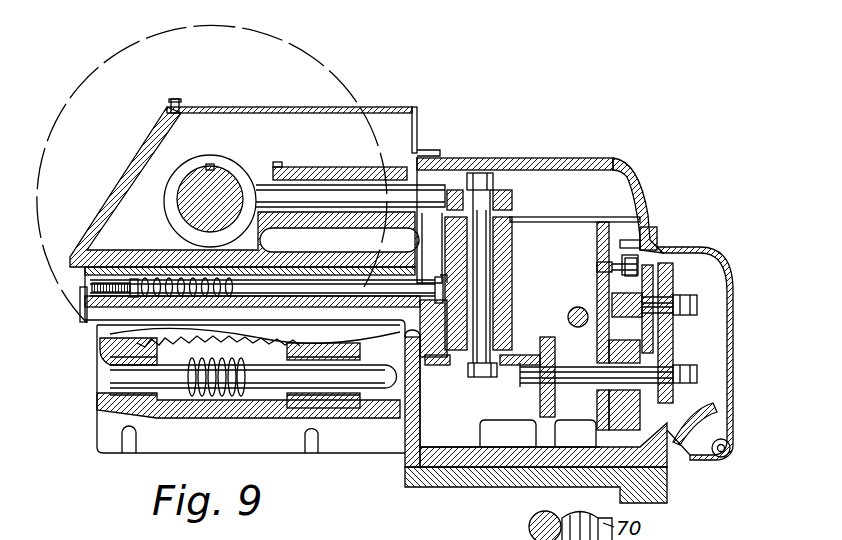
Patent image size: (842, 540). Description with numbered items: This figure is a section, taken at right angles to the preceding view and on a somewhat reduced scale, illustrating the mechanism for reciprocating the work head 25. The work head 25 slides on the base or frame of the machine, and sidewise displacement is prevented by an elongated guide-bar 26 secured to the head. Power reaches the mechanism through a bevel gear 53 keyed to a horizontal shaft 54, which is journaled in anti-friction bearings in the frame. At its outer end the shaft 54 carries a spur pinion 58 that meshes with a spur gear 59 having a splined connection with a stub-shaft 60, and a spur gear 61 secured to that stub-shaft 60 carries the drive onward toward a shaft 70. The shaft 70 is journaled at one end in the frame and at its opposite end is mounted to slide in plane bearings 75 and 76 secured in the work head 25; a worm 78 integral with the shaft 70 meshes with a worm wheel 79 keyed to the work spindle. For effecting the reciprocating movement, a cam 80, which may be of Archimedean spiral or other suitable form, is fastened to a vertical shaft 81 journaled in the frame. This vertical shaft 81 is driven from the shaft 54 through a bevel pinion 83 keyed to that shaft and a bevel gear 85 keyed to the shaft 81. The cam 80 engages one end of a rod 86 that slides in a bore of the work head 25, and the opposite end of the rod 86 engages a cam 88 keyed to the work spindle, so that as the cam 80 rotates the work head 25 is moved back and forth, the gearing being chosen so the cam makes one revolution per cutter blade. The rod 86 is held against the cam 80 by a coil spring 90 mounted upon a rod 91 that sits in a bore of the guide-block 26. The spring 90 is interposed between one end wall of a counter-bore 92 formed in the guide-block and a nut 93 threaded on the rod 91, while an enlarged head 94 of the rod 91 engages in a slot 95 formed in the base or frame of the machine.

The work head 25 is at (60, 268).
The guide-bar 26 is at (80, 323).
The bevel gear 53 is at (230, 165).
The horizontal shaft 54 is at (603, 388).
The spur pinion 58 is at (668, 405).
The spur gear 59 is at (673, 345).
The stub-shaft 60 is at (663, 312).
The spur gear 61 is at (652, 245).
The shaft 70 is at (270, 395).
The plane bearing 75 is at (112, 405).
The plane bearing 76 is at (345, 412).
The worm 78 is at (215, 398).
The worm wheel 79 is at (110, 357).
The cam 80 is at (513, 196).
The vertical shaft 81 is at (495, 302).
The bevel pinion 83 is at (540, 398).
The bevel gear 85 is at (478, 362).
The rod 86 is at (432, 165).
The cam 88 is at (170, 205).
The coil spring 90 is at (186, 278).
The rod 91 is at (295, 243).
The counter-bore 92 is at (85, 289).
The nut 93 is at (140, 280).
The enlarged head 94 is at (497, 264).
The slot 95 is at (440, 250).